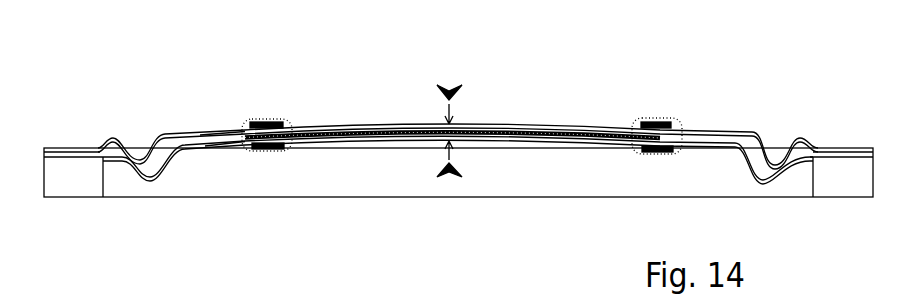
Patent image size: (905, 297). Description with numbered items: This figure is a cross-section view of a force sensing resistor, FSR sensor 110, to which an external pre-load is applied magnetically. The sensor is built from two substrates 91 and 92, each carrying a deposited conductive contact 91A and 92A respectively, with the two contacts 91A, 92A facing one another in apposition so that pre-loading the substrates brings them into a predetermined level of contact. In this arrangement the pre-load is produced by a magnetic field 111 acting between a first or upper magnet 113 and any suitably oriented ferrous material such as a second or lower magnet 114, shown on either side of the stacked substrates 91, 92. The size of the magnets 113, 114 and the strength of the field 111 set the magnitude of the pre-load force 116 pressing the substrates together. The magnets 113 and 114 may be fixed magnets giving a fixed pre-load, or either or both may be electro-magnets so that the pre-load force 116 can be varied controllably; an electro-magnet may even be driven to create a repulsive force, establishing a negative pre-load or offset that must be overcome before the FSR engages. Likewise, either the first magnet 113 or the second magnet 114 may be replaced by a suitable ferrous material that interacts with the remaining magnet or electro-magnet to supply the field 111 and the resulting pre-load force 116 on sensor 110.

The FSR sensor 110 is at (122, 31).
The substrate 91 is at (458, 131).
The conductive contact 91A is at (215, 113).
The substrate 92 is at (458, 166).
The conductive contact 92A is at (221, 157).
The magnetic field 111 is at (452, 111).
The first or upper magnet 113 is at (457, 110).
The second or lower magnet 114 is at (462, 192).
The pre-load force 116 is at (471, 131).